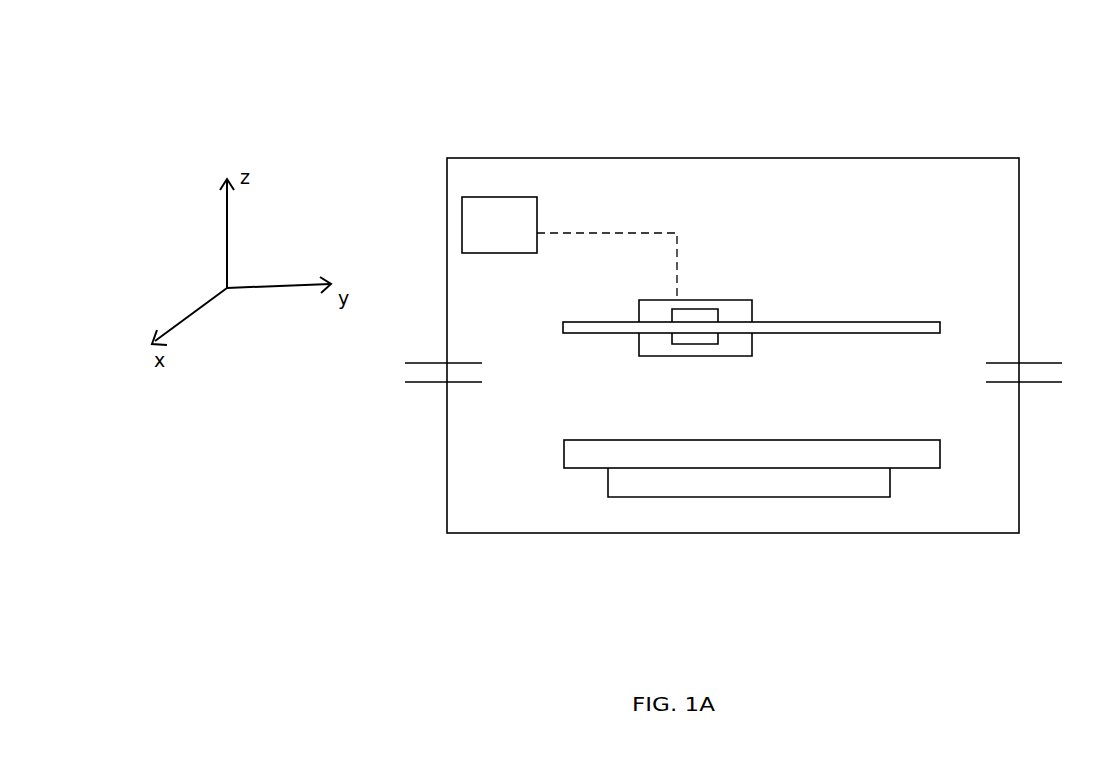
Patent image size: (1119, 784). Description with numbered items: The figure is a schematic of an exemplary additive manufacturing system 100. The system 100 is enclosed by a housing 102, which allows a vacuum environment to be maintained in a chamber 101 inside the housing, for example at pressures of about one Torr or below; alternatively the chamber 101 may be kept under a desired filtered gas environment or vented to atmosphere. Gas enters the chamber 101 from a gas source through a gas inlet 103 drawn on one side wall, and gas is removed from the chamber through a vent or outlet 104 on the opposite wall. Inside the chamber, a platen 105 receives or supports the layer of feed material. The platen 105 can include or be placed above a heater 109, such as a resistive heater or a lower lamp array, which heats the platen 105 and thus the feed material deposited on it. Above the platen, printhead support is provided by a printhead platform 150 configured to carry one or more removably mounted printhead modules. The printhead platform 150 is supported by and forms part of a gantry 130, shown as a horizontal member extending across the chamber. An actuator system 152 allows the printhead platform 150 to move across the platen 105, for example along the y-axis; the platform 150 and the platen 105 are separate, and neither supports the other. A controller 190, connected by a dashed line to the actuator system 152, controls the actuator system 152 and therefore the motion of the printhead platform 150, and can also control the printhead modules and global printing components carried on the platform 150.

The additive manufacturing system 100 is at (566, 66).
The chamber 101 is at (920, 205).
The housing 102 is at (672, 158).
The gas inlet 103 is at (413, 372).
The vent 104 is at (1045, 372).
The platen 105 is at (752, 454).
The heater 109 is at (749, 482).
The gantry 130 is at (878, 321).
The printhead platform 150 is at (728, 308).
The actuator system 152 is at (701, 341).
The controller 190 is at (569, 248).